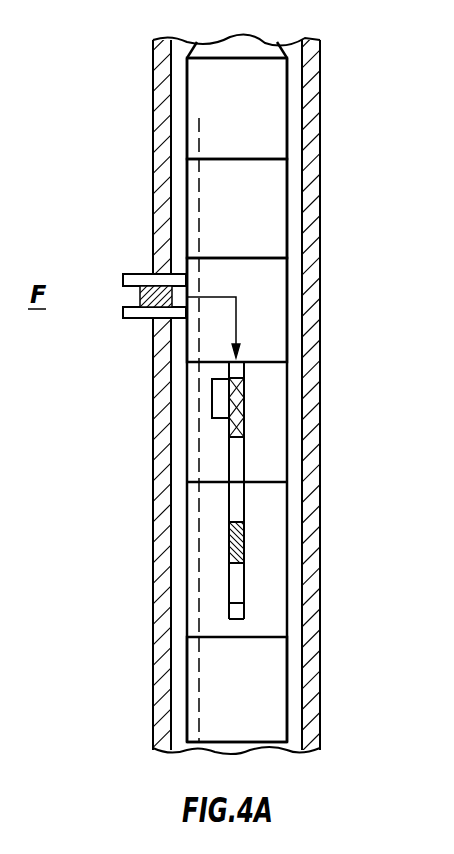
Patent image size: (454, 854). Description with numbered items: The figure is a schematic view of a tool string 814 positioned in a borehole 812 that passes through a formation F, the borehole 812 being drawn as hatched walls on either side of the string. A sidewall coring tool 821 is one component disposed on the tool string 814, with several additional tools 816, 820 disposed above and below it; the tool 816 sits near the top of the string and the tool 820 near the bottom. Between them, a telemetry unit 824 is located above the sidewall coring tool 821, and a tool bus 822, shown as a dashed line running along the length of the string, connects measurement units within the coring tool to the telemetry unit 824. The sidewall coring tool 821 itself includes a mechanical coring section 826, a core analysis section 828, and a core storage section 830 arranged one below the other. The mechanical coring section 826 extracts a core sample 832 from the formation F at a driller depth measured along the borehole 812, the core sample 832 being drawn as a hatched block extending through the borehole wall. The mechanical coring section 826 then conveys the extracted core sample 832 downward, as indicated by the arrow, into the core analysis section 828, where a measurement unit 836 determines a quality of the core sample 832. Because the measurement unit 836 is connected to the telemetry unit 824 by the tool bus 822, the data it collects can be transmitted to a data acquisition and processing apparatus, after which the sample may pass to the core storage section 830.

The borehole 812 is at (170, 731).
The tool string 814 is at (287, 89).
The additional tool 816 is at (262, 137).
The telemetry unit 824 is at (258, 198).
The tool bus 822 is at (199, 143).
The sidewall coring tool 821 is at (226, 307).
The mechanical coring section 826 is at (270, 330).
The core sample 832 is at (150, 310).
The measurement unit 836 is at (218, 400).
The core analysis section 828 is at (267, 437).
The core storage section 830 is at (272, 604).
The additional tool 820 is at (252, 675).